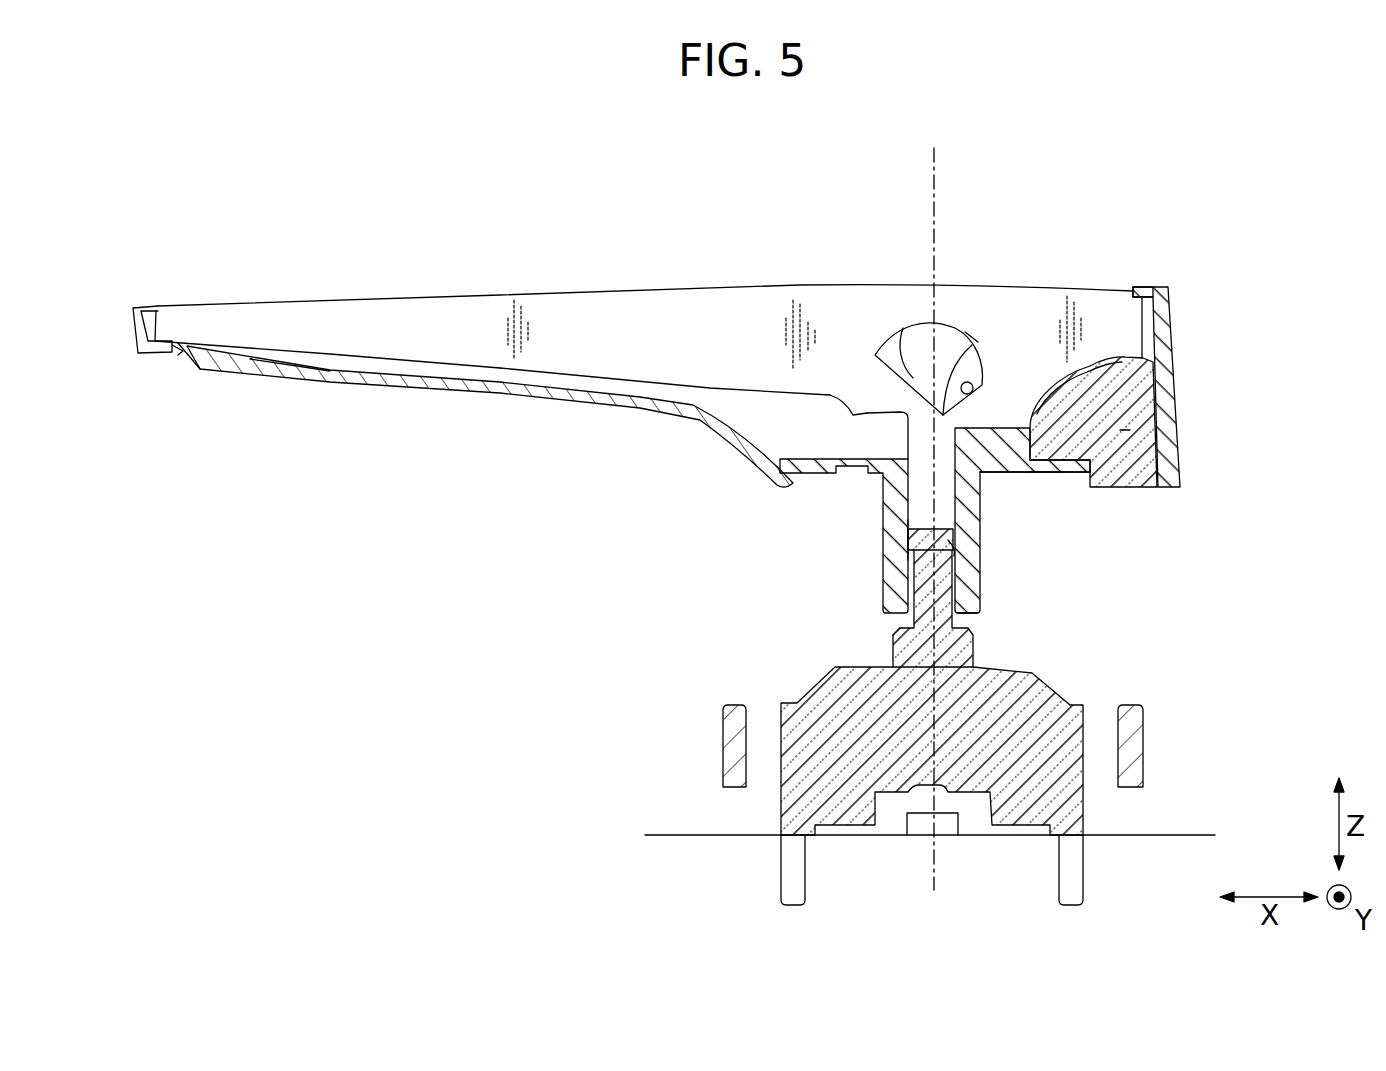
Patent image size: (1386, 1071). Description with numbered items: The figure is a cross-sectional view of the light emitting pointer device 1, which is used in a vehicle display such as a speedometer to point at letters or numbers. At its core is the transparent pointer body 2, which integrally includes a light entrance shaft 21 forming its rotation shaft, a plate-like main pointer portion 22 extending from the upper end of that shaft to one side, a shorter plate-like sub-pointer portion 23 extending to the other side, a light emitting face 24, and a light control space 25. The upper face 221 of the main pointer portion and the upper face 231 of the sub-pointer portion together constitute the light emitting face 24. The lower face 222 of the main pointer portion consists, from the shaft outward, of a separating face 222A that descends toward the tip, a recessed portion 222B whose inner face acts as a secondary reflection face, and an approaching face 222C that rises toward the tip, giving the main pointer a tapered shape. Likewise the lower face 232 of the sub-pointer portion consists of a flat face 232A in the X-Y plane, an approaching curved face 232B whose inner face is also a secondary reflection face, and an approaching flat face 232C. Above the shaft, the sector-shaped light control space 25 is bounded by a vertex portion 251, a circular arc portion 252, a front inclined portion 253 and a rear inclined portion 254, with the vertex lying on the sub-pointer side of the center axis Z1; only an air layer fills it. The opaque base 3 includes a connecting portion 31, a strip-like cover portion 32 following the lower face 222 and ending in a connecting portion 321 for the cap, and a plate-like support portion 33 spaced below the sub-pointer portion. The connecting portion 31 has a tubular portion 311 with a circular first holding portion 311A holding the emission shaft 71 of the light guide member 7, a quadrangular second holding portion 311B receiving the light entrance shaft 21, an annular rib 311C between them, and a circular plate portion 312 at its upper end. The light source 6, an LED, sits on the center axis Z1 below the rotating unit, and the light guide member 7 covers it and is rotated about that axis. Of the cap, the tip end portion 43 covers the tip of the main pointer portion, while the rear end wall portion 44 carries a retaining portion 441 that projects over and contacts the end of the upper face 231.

The light emitting pointer device 1 is at (657, 305).
The pointer body 2 is at (657, 354).
The base 3 is at (485, 416).
The light source 6 is at (940, 822).
The light guide member 7 is at (973, 694).
The light entrance shaft 21 is at (940, 484).
The main pointer portion 22 is at (531, 367).
The sub-pointer portion 23 is at (1107, 262).
The light emitting face 24 is at (665, 292).
The light control space 25 is at (929, 293).
The connecting portion 31 is at (1003, 547).
The cover portion 32 is at (322, 383).
The support portion 33 is at (1088, 483).
The tip end portion 43 is at (141, 352).
The rear end wall portion 44 is at (1203, 355).
The emission shaft 71 is at (900, 627).
The upper face 221 is at (390, 295).
The lower face 222 is at (531, 441).
The separating face 222A is at (867, 414).
The recessed portion 222B is at (830, 396).
The approaching face 222C is at (452, 370).
The upper face 231 is at (1110, 290).
The lower face 232 is at (1161, 418).
The flat face 232A is at (1040, 478).
The approaching curved face 232B is at (1125, 425).
The approaching flat face 232C is at (1150, 377).
The vertex portion 251 is at (975, 347).
The circular arc portion 252 is at (975, 347).
The front inclined portion 253 is at (903, 328).
The rear inclined portion 254 is at (1006, 371).
The tubular portion 311 is at (833, 549).
The first holding portion 311A is at (963, 620).
The second holding portion 311B is at (947, 545).
The annular rib 311C is at (884, 560).
The circular plate portion 312 is at (1017, 477).
The connecting portion 321 is at (168, 358).
The retaining portion 441 is at (1150, 290).
The center axis Z1 is at (940, 148).